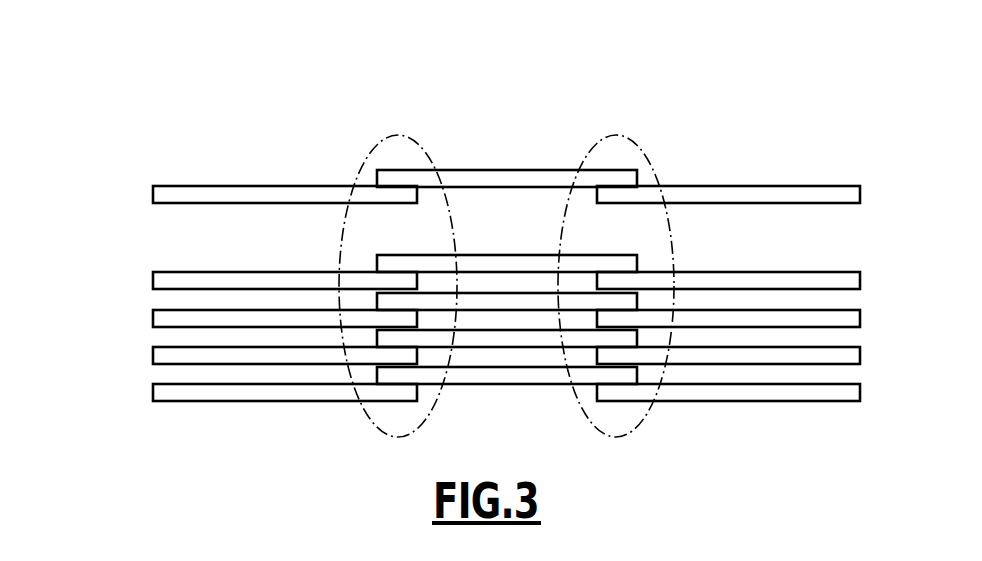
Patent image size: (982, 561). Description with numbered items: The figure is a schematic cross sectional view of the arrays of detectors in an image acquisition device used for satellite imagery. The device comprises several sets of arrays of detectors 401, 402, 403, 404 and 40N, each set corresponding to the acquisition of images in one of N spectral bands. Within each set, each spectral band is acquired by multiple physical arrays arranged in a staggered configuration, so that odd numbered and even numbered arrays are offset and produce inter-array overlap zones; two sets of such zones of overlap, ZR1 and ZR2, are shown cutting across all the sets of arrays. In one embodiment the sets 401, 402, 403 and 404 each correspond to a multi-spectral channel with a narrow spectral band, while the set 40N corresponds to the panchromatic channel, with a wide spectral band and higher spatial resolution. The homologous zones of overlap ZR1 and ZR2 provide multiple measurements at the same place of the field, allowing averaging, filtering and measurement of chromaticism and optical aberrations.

The set of arrays of detectors 40N is at (132, 193).
The set of arrays of detectors 404 is at (132, 279).
The set of arrays of detectors 403 is at (132, 316).
The set of arrays of detectors 402 is at (132, 353).
The set of arrays of detectors 401 is at (132, 391).
The zone of overlap ZR1 is at (398, 135).
The zone of overlap ZR2 is at (615, 135).